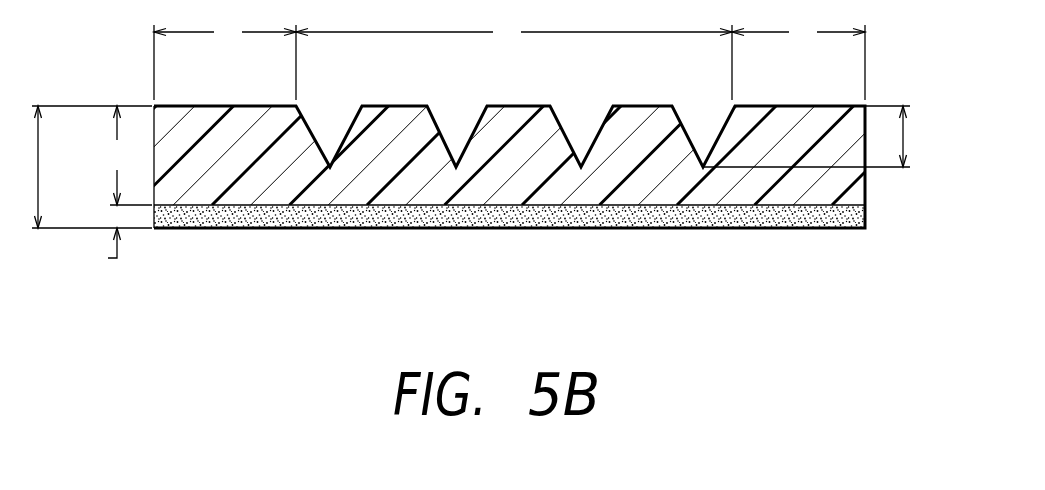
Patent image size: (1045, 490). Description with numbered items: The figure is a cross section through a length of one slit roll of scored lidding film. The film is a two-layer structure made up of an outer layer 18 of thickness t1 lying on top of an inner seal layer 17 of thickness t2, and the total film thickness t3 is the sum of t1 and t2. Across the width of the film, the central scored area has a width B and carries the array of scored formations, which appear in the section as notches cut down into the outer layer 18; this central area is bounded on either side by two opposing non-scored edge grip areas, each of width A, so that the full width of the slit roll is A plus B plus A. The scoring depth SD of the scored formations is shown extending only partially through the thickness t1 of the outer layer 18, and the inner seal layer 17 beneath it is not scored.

The inner seal layer 17 is at (866, 213).
The outer layer 18 is at (868, 130).
The width of non-scored edge grip area A is at (509, 59).
The width of central scored area B is at (514, 31).
The scoring depth SD is at (903, 105).
The thickness of outer layer t1 is at (128, 155).
The thickness of inner seal layer t2 is at (98, 250).
The total film thickness t3 is at (91, 167).